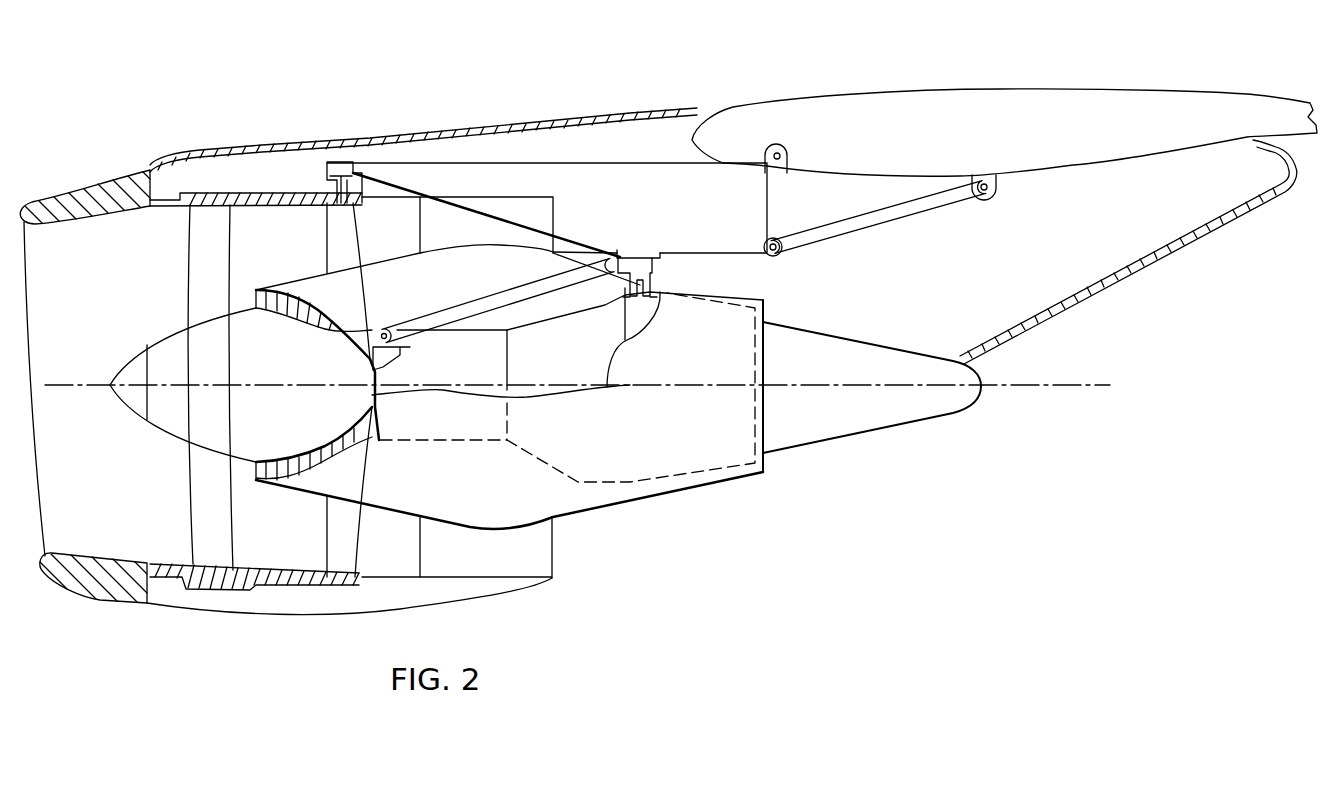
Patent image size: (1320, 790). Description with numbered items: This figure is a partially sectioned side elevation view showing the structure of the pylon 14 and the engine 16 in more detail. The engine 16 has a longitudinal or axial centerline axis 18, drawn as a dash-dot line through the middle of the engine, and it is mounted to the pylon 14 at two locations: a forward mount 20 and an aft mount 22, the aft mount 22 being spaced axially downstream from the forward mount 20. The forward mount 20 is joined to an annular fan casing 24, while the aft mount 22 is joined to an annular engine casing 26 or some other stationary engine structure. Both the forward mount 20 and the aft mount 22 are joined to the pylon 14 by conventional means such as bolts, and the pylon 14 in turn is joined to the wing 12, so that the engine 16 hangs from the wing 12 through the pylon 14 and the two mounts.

The wing 12 is at (1073, 100).
The pylon 14 is at (632, 183).
The engine 16 is at (88, 150).
The centerline axis 18 is at (45, 392).
The forward mount 20 is at (343, 173).
The aft mount 22 is at (640, 262).
The fan casing 24 is at (360, 197).
The engine casing 26 is at (660, 290).